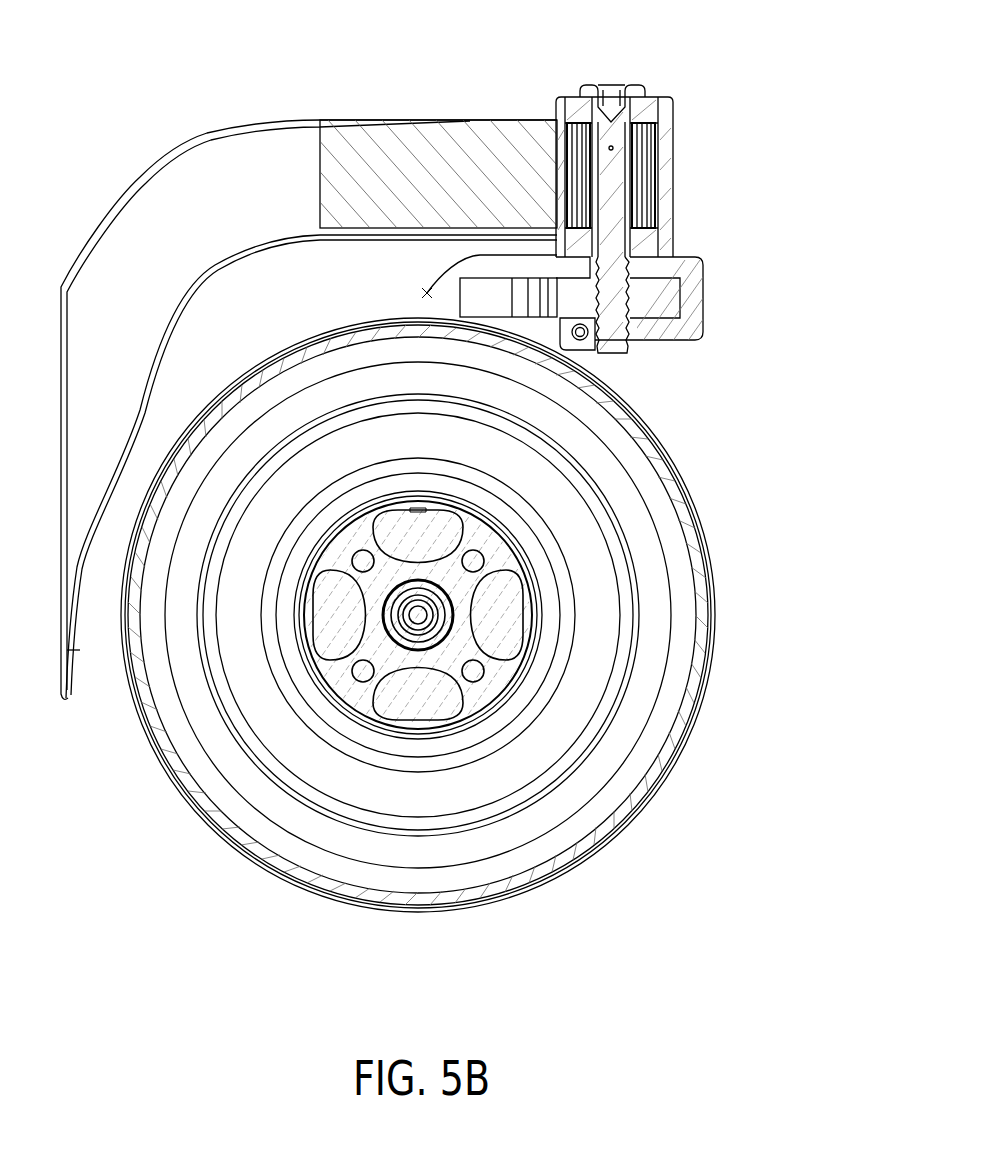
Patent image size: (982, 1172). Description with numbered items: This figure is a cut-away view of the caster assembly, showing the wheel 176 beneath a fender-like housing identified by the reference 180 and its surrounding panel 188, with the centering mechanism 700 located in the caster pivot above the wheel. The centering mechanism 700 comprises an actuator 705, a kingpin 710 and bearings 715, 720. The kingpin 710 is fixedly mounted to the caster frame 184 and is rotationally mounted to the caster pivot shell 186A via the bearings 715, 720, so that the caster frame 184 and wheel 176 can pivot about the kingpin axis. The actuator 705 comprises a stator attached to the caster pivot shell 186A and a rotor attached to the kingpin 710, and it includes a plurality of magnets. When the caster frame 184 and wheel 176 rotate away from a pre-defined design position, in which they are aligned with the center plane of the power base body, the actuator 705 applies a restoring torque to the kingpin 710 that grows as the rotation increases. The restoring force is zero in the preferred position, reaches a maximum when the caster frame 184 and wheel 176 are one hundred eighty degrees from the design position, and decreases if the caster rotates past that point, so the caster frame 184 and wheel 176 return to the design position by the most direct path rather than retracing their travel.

The wheel 176 is at (708, 577).
The fender assembly 180 is at (152, 100).
The caster frame 184 is at (428, 292).
The caster pivot shell 186A is at (668, 192).
The fender 188 is at (122, 230).
The centering mechanism 700 is at (530, 97).
The actuator 705 is at (650, 157).
The kingpin 710 is at (623, 357).
The bearing 715 is at (648, 104).
The bearing 720 is at (648, 243).